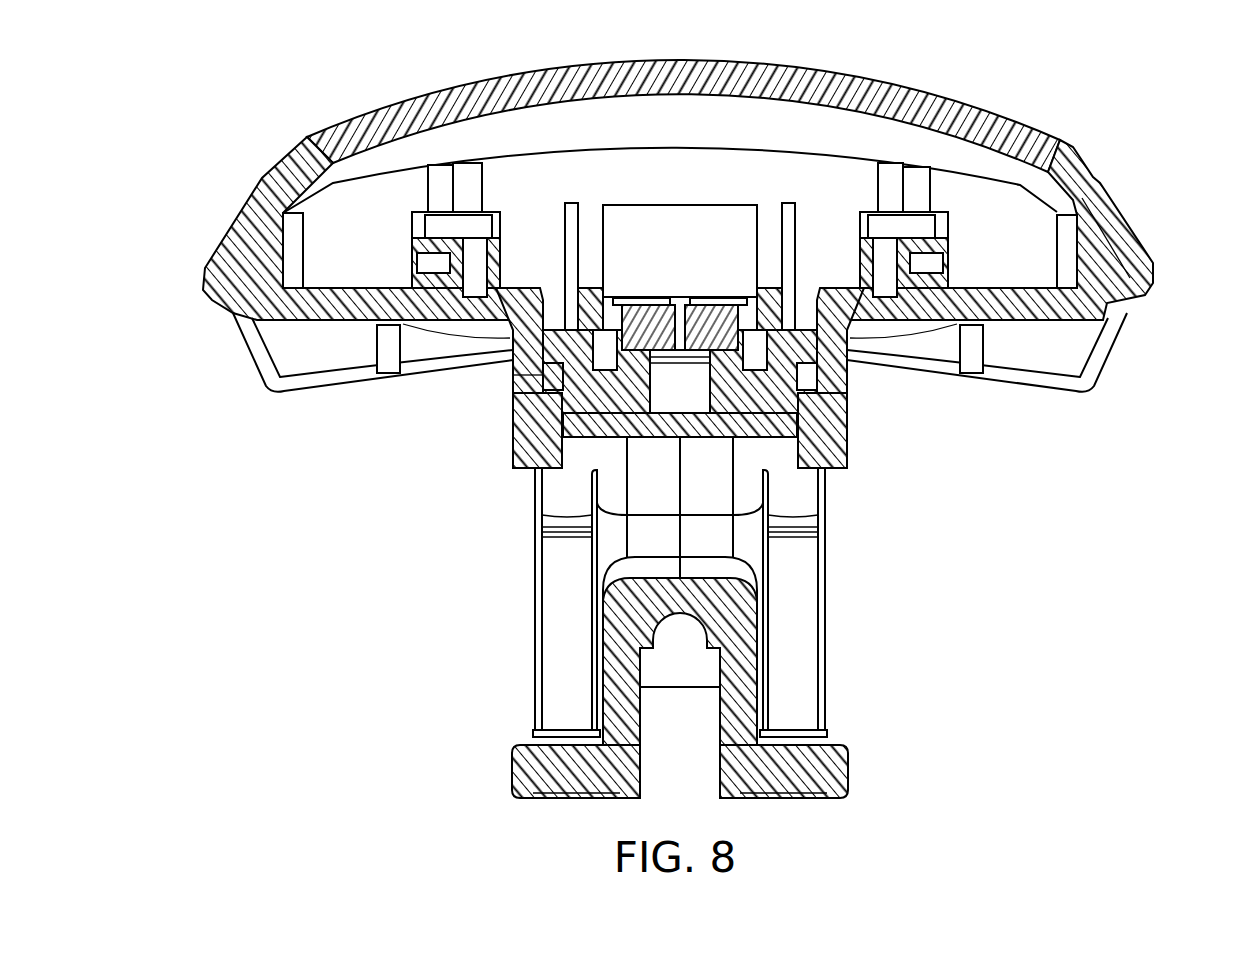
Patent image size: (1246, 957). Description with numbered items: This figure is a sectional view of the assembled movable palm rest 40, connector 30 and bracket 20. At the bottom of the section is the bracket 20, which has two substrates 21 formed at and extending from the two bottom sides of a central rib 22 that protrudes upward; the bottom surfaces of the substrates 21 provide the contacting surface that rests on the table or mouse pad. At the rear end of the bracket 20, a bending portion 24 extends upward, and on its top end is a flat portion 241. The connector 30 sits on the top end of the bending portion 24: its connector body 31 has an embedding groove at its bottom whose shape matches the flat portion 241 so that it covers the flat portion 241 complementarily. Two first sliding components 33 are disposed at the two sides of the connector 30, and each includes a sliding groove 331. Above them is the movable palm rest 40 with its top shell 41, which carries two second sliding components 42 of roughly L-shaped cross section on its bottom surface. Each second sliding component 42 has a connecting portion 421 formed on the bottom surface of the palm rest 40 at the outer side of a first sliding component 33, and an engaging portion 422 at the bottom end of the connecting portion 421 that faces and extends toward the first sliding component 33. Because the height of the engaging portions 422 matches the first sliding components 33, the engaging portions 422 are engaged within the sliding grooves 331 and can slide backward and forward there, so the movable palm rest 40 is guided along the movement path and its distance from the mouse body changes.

The bracket 20 is at (853, 671).
The substrates 21 is at (630, 668).
The rib 22 is at (840, 768).
The bending portion 24 is at (808, 504).
The flat portion 241 is at (788, 436).
The connector 30 is at (871, 439).
The connector body 31 is at (524, 454).
The first sliding component 33 is at (834, 352).
The sliding groove 331 is at (813, 378).
The movable palm rest 40 is at (1158, 201).
The top shell of cap 41 is at (942, 103).
The second sliding component 42 is at (508, 400).
The connecting portion 421 is at (510, 338).
The engaging portion 422 is at (522, 440).